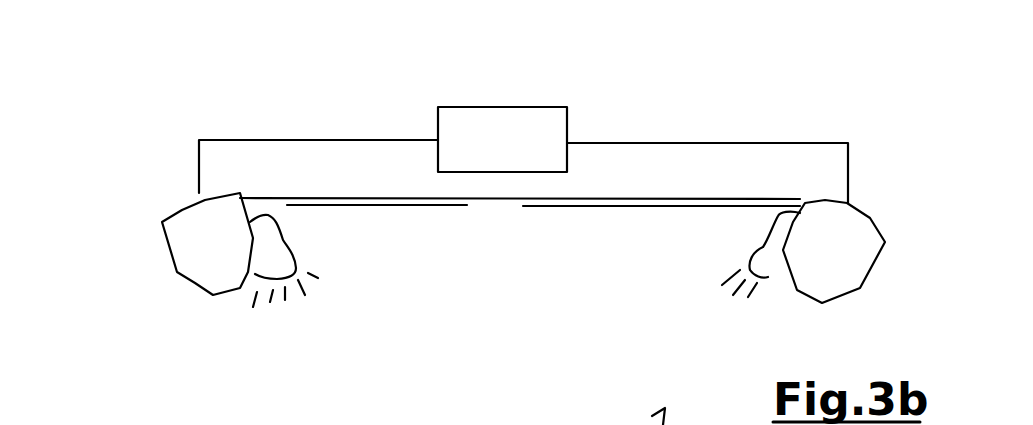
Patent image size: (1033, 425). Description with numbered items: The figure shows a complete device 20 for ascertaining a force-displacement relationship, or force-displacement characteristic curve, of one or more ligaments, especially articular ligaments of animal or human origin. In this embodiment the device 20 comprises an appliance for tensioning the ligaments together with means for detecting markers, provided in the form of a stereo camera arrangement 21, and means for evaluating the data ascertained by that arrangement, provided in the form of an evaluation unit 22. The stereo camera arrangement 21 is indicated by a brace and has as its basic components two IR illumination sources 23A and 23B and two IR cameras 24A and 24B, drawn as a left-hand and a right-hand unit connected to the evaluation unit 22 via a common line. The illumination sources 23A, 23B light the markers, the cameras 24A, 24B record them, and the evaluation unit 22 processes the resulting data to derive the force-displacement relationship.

The device 20 is at (813, 88).
The stereo camera arrangement 21 is at (177, 178).
The evaluation unit 22 is at (567, 122).
The IR illumination source 23A is at (297, 250).
The IR illumination source 23B is at (757, 235).
The IR camera 24A is at (200, 290).
The IR camera 24B is at (790, 297).